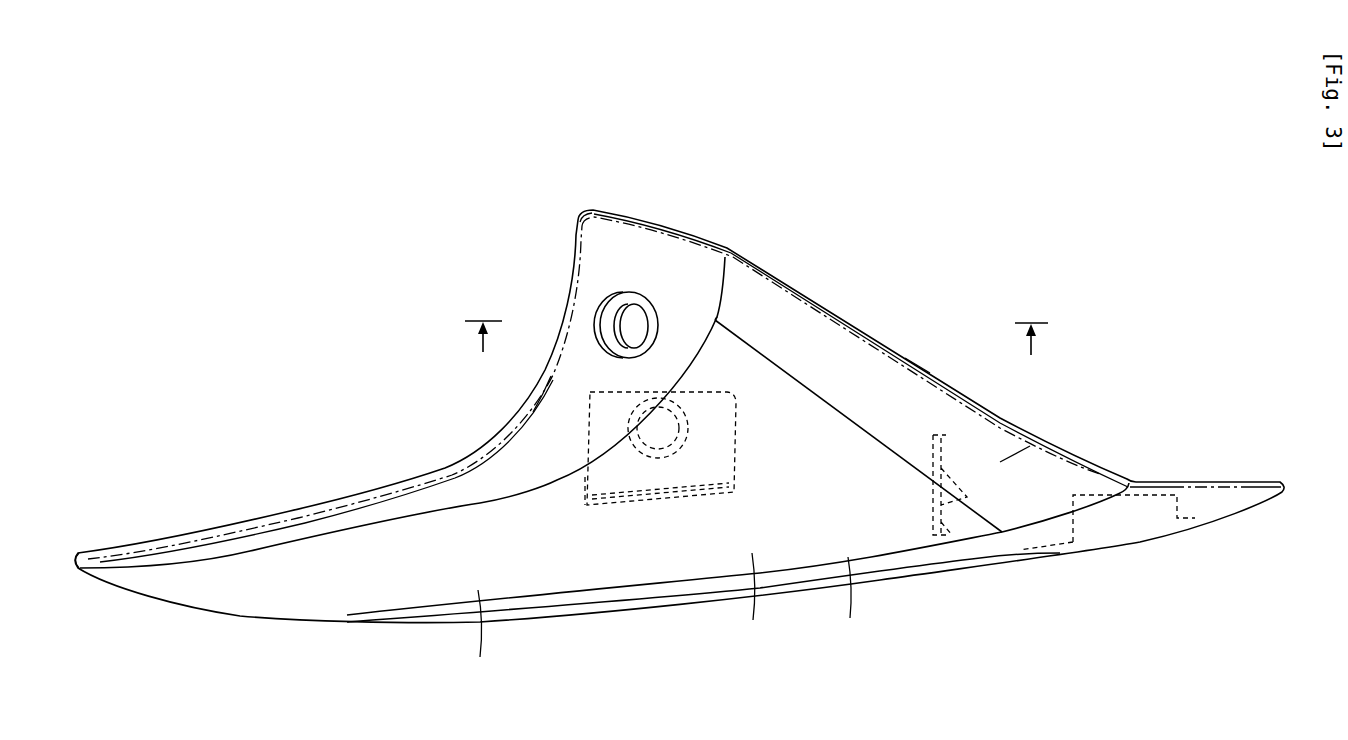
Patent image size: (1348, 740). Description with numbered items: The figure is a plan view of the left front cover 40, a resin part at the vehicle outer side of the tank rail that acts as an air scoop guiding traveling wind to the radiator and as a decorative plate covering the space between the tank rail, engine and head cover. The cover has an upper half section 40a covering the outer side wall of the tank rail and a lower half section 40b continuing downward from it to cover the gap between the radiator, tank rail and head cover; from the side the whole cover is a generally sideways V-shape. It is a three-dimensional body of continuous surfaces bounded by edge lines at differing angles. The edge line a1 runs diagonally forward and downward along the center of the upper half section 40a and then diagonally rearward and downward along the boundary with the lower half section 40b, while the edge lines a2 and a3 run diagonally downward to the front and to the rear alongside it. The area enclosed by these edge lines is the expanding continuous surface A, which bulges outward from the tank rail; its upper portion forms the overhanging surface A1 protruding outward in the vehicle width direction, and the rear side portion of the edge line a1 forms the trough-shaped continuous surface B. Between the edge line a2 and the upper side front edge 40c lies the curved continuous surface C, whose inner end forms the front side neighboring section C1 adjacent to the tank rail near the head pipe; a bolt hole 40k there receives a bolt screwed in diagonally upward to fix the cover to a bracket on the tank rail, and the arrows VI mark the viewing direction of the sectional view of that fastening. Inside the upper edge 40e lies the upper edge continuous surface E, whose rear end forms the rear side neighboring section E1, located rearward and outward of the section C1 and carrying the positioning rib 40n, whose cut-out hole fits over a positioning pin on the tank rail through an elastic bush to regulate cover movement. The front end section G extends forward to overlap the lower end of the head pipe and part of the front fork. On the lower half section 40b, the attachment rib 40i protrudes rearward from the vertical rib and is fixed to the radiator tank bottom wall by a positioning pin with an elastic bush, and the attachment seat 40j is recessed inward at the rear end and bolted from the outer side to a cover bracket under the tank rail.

The front cover 40 is at (638, 630).
The upper half section 40a is at (558, 258).
The lower half section 40b is at (1066, 567).
The upper side front edge 40c is at (436, 463).
The upper edge 40e is at (905, 358).
The attachment rib 40i is at (736, 403).
The attachment seat 40j is at (1150, 493).
The bolt hole 40k is at (610, 306).
The positioning rib 40n is at (942, 437).
The edge line a1 is at (603, 589).
The edge line a2 is at (530, 492).
The edge line a3 is at (837, 417).
The expanding continuous surface A is at (482, 639).
The overhanging surface A1 is at (756, 605).
The trough shaped continuous surface B is at (848, 601).
The upper side vehicle width direction continuous surface C is at (547, 402).
The front side neighboring section C1 is at (610, 268).
The upper edge continuous surface E is at (917, 400).
The rear side neighboring section E1 is at (1000, 462).
The front end section G is at (73, 563).
The section VI arrows VI is at (762, 349).